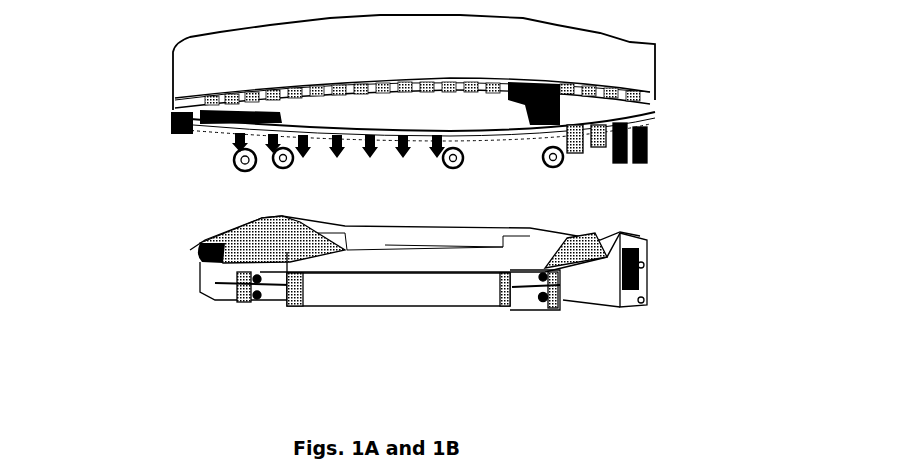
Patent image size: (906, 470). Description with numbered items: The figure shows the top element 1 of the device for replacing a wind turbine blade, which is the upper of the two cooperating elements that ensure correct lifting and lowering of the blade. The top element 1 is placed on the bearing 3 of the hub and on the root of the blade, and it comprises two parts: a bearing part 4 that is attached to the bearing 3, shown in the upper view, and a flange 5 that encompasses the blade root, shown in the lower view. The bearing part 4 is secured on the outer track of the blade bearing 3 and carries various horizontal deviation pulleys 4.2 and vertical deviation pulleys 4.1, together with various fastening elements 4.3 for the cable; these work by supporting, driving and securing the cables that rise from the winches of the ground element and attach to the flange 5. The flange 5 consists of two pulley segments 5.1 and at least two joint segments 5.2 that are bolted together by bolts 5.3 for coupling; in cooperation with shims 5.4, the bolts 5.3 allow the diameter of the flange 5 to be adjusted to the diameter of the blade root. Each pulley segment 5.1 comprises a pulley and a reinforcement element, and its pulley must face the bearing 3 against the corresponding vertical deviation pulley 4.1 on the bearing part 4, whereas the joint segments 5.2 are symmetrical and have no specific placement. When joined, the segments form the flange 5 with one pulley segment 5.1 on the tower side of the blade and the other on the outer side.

In FIG. 1A, the top element 1 is at (732, 177).
In FIG. 1A, the bearing 3 is at (612, 60).
In FIG. 1A, the bearing part 4 is at (139, 79).
In FIG. 1A, the vertical deviation pulley 4.1 is at (647, 137).
In FIG. 1A, the horizontal deviation pulley 4.2 is at (232, 132).
In FIG. 1A, the fastening element 4.3 is at (173, 130).
In FIG. 1B, the flange 5 is at (138, 271).
In FIG. 1B, the pulley segment 5.1 is at (605, 257).
In FIG. 1B, the joint segment 5.2 is at (327, 290).
In FIG. 1B, the bolt 5.3 is at (541, 296).
In FIG. 1B, the shim 5.4 is at (553, 298).